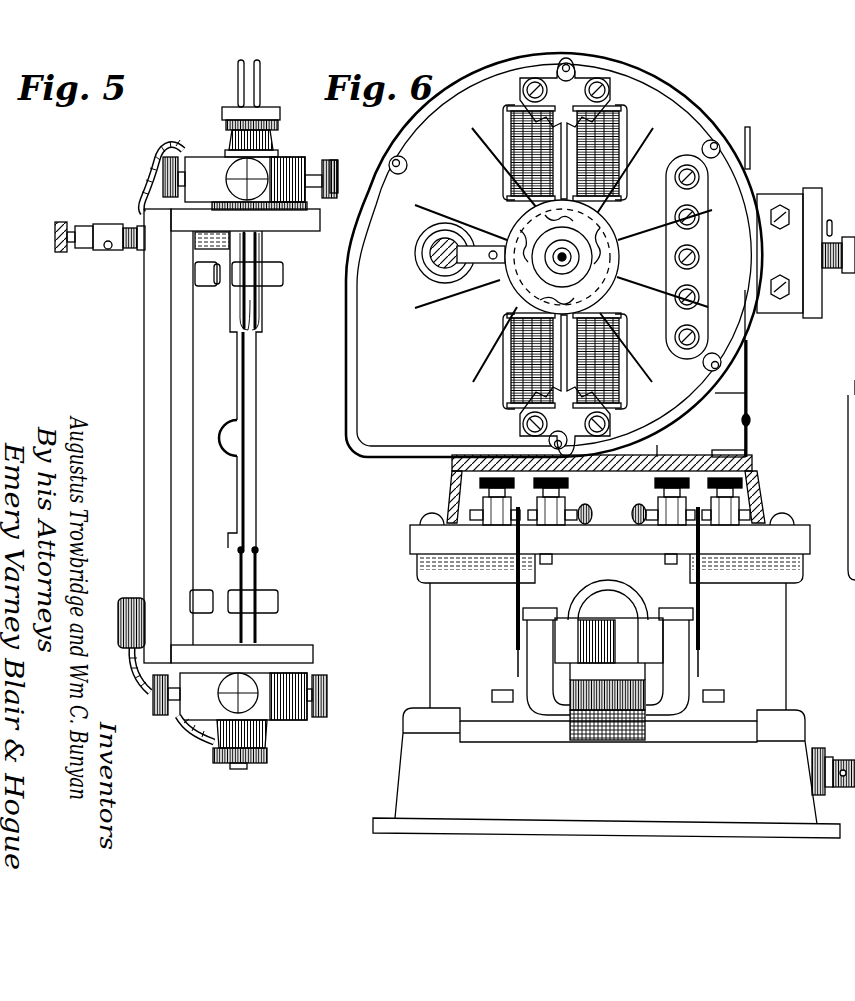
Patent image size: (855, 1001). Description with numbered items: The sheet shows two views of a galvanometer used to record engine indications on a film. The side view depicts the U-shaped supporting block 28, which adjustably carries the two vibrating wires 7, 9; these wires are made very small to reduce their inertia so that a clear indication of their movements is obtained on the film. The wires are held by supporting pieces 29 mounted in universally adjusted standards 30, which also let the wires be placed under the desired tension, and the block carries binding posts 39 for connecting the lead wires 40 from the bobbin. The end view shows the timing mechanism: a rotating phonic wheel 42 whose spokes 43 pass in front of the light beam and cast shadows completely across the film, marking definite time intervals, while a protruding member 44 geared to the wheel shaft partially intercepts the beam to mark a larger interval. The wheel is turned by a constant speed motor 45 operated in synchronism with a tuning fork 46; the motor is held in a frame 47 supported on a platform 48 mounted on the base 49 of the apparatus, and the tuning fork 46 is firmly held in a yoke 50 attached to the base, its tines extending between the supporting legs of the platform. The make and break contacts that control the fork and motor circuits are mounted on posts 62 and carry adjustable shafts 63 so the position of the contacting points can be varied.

In FIG. 5, the vibrating wire 7 is at (258, 430).
In FIG. 5, the vibrating wire 9 is at (244, 445).
In FIG. 5, the block 28 is at (157, 397).
In FIG. 5, the supporting pieces 29 is at (243, 62).
In FIG. 5, the standards 30 is at (293, 160).
In FIG. 5, the binding posts 39 is at (60, 221).
In FIG. 6, the lead wires 40 is at (846, 507).
In FIG. 6, the phonic wheel 42 is at (612, 262).
In FIG. 6, the spokes 43 is at (480, 150).
In FIG. 6, the protruding member 44 is at (466, 240).
In FIG. 6, the constant speed motor 45 is at (626, 131).
In FIG. 6, the tuning fork 46 is at (651, 626).
In FIG. 6, the frame 47 is at (707, 125).
In FIG. 6, the platform 48 is at (760, 464).
In FIG. 6, the base 49 is at (422, 768).
In FIG. 6, the yoke 50 is at (629, 580).
In FIG. 6, the posts 62 is at (545, 614).
In FIG. 6, the adjustable shafts 63 is at (633, 512).